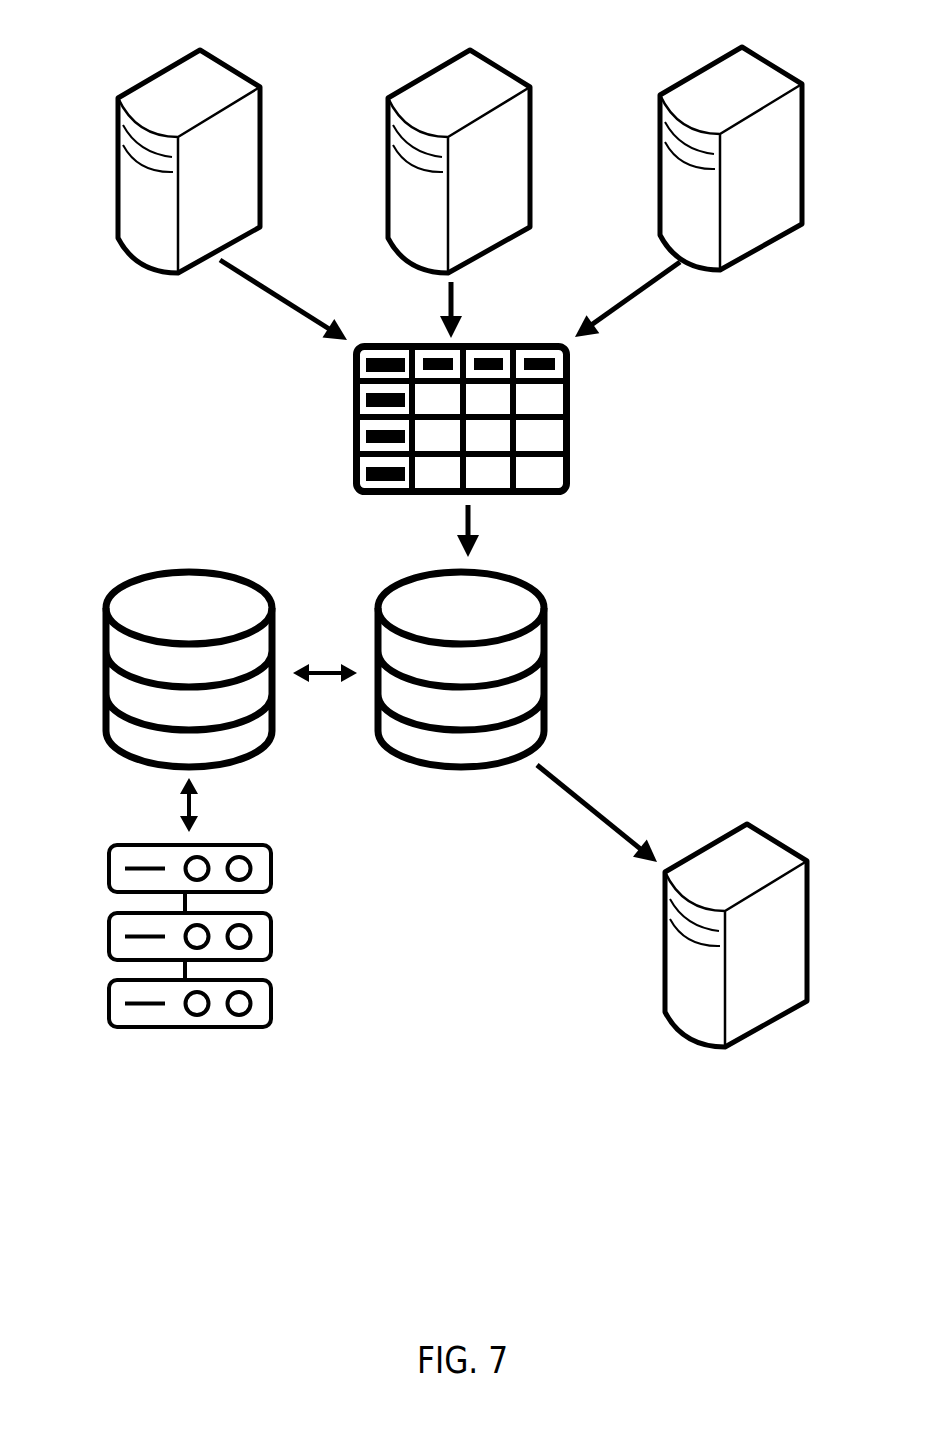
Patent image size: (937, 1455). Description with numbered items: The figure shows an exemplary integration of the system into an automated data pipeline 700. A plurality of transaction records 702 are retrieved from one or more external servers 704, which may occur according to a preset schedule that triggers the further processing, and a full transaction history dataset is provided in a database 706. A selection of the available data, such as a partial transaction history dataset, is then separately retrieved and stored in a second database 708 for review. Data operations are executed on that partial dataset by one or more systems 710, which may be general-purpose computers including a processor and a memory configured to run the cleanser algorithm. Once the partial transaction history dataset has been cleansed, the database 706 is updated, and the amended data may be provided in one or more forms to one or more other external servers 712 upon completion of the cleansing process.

The automated data pipeline 700 is at (418, 536).
The transaction records 702 is at (462, 445).
The external servers 704 is at (449, 174).
The database 706 is at (461, 691).
The second database 708 is at (184, 691).
The systems 710 is at (184, 959).
The other external servers 712 is at (708, 948).